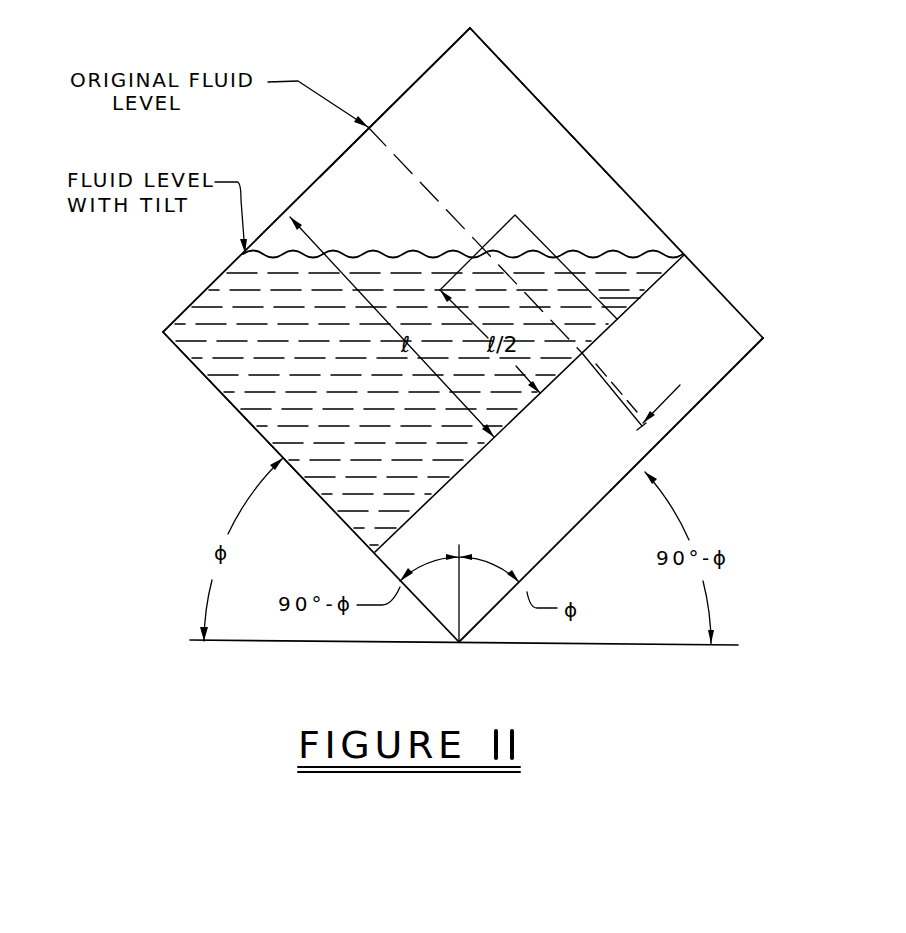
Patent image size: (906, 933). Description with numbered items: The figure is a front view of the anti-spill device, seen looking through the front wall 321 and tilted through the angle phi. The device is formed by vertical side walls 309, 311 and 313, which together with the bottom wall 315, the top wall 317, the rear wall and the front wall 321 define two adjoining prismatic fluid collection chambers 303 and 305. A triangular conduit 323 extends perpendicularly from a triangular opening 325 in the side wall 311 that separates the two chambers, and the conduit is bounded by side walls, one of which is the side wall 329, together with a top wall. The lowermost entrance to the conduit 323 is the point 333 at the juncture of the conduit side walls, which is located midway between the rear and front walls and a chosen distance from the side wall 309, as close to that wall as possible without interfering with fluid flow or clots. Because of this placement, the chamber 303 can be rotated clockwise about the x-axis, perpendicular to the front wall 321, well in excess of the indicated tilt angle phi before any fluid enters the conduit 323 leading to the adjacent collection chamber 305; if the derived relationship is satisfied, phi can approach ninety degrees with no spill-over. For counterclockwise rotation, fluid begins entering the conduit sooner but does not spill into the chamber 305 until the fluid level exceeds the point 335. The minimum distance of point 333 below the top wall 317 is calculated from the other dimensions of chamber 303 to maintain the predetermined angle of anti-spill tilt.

The fluid collection chamber 303 is at (488, 124).
The fluid collection chamber 305 is at (550, 480).
The vertical side wall 309 is at (417, 80).
The vertical side wall 311 is at (430, 492).
The vertical side wall 313 is at (658, 445).
The bottom wall 315 is at (218, 388).
The top wall 317 is at (537, 97).
The front wall 321 is at (353, 172).
The triangular conduit 323 is at (600, 302).
The triangular opening 325 is at (594, 342).
The side wall of conduit 329 is at (523, 243).
The point 333 is at (478, 247).
The point 335 is at (584, 362).